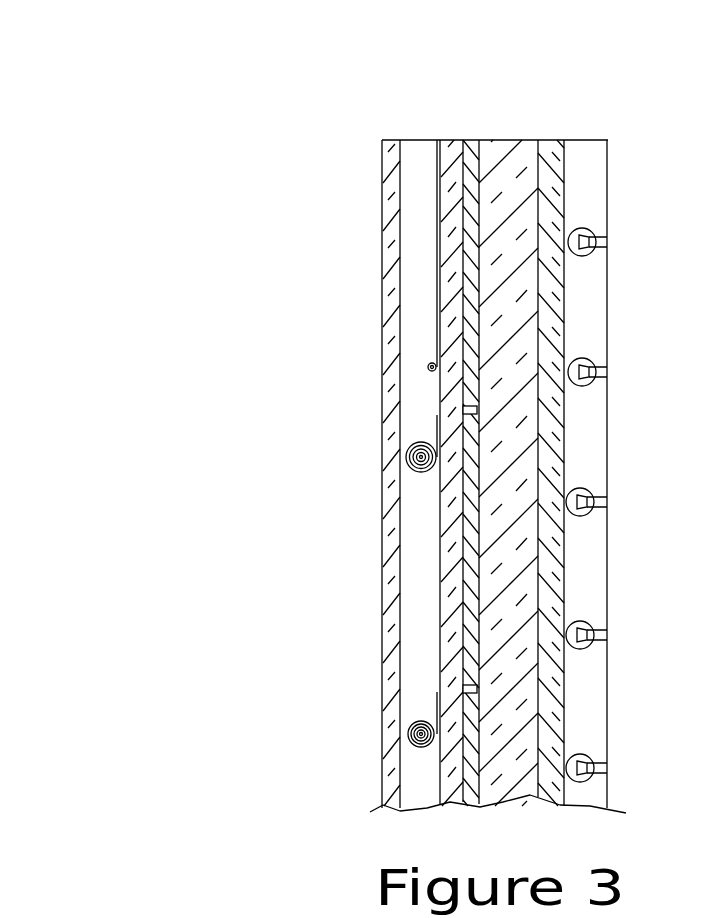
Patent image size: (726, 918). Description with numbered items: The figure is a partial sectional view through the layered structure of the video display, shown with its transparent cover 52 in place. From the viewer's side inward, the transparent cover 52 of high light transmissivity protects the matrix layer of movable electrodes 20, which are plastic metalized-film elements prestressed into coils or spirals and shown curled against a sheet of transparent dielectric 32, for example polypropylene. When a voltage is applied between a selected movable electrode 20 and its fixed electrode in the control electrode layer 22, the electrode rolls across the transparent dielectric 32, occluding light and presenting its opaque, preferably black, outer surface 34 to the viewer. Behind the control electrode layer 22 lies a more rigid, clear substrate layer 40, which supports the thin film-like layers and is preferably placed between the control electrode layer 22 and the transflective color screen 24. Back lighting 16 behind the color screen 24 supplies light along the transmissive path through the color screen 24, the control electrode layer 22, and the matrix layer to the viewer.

The back lighting 16 is at (590, 230).
The movable electrodes 20 is at (408, 734).
The control electrode layer 22 is at (468, 147).
The color screen 24 is at (552, 147).
The transparent dielectric 32 is at (450, 147).
The outer surface 34 is at (437, 289).
The substrate layer 40 is at (518, 152).
The transparent cover 52 is at (393, 147).